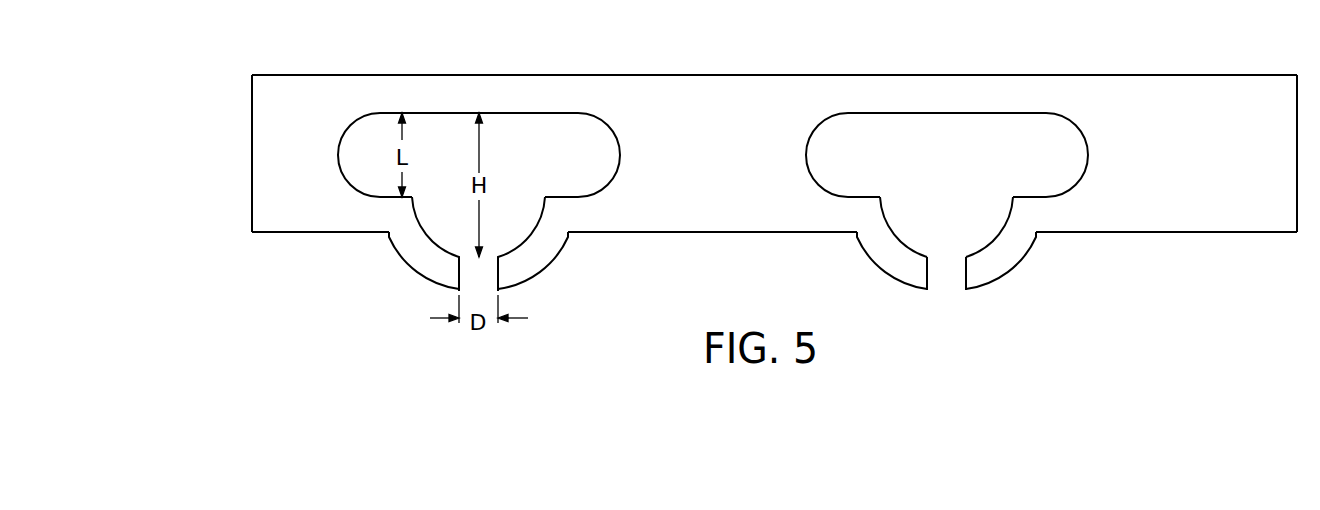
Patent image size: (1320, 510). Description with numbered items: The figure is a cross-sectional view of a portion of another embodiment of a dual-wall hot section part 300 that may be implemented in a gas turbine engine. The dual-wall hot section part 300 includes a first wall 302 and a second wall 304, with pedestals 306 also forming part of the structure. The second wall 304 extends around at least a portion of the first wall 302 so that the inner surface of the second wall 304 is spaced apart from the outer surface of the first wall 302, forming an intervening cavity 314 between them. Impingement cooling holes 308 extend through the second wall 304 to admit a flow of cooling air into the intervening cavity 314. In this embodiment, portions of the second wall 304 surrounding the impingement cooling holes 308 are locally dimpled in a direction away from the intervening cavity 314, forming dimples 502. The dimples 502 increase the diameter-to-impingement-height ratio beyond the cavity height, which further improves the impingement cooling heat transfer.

The dual-wall hot section part 300 is at (684, 142).
The first wall 302 is at (1036, 88).
The second wall 304 is at (1107, 223).
The pedestals 306 is at (719, 88).
The impingement cooling holes 308 is at (947, 287).
The intervening cavity 314 is at (970, 165).
The dimples 502 is at (714, 273).